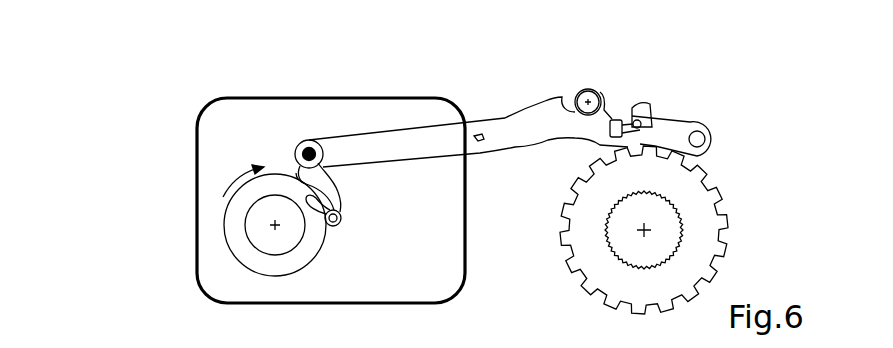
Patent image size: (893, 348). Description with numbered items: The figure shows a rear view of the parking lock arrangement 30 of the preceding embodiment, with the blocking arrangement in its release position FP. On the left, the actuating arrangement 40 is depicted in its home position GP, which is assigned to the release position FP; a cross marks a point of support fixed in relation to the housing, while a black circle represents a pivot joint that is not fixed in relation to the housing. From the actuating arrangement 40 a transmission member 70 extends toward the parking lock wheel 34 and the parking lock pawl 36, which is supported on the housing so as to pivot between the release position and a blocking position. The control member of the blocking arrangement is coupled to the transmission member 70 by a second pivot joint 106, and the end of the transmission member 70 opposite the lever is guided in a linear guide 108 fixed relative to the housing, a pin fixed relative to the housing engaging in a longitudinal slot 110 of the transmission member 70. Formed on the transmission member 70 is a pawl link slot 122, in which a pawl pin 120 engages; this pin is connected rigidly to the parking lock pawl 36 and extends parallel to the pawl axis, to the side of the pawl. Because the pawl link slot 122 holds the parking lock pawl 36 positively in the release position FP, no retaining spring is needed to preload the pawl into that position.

The parking lock arrangement 30 is at (647, 97).
The parking lock wheel 34 is at (698, 229).
The parking lock pawl 36 is at (685, 128).
The actuating arrangement 40 is at (196, 225).
The transmission member 70 is at (408, 147).
The second pivot joint 106 is at (482, 133).
The linear guide 108 is at (597, 76).
The longitudinal slot 110 is at (573, 97).
The pawl pin 120 is at (653, 121).
The pawl link slot 122 is at (618, 118).
The home position GP is at (200, 110).
The release position FP is at (695, 101).